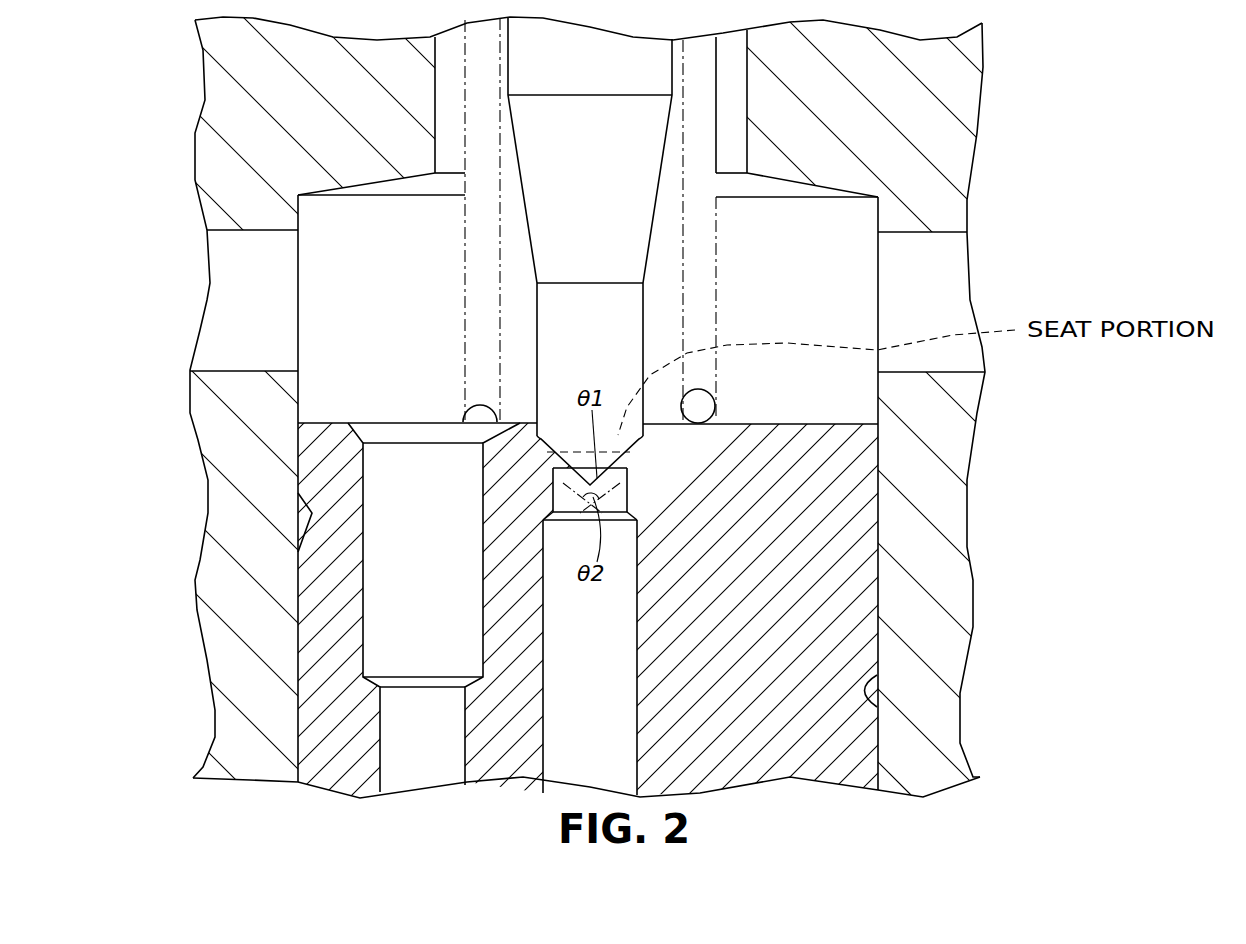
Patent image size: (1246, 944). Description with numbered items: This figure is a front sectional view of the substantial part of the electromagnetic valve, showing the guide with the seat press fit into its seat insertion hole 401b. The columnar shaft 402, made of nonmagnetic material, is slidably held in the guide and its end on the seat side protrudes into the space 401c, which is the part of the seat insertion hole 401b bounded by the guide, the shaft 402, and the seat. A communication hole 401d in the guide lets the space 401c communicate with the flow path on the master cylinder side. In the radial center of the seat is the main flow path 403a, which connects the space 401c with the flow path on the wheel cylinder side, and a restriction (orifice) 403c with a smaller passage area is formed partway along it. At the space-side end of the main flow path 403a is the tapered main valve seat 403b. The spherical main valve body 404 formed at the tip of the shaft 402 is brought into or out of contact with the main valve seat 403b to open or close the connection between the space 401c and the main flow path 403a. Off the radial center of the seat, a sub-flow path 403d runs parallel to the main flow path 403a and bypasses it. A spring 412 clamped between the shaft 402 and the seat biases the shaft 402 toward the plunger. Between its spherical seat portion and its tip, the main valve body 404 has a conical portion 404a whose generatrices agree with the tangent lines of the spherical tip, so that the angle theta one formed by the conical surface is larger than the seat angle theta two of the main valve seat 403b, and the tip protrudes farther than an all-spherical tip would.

The shaft 402 is at (767, 251).
The space 401c is at (623, 405).
The communication hole 401d is at (637, 301).
The seat insertion hole 401b is at (623, 610).
The main flow path 403a is at (813, 657).
The main valve seat 403b is at (815, 424).
The restriction (orifice) 403c is at (812, 535).
The sub-flow path 403d is at (315, 607).
The main valve body 404 is at (325, 472).
The conical portion 404a is at (331, 530).
The spring 412 is at (412, 404).